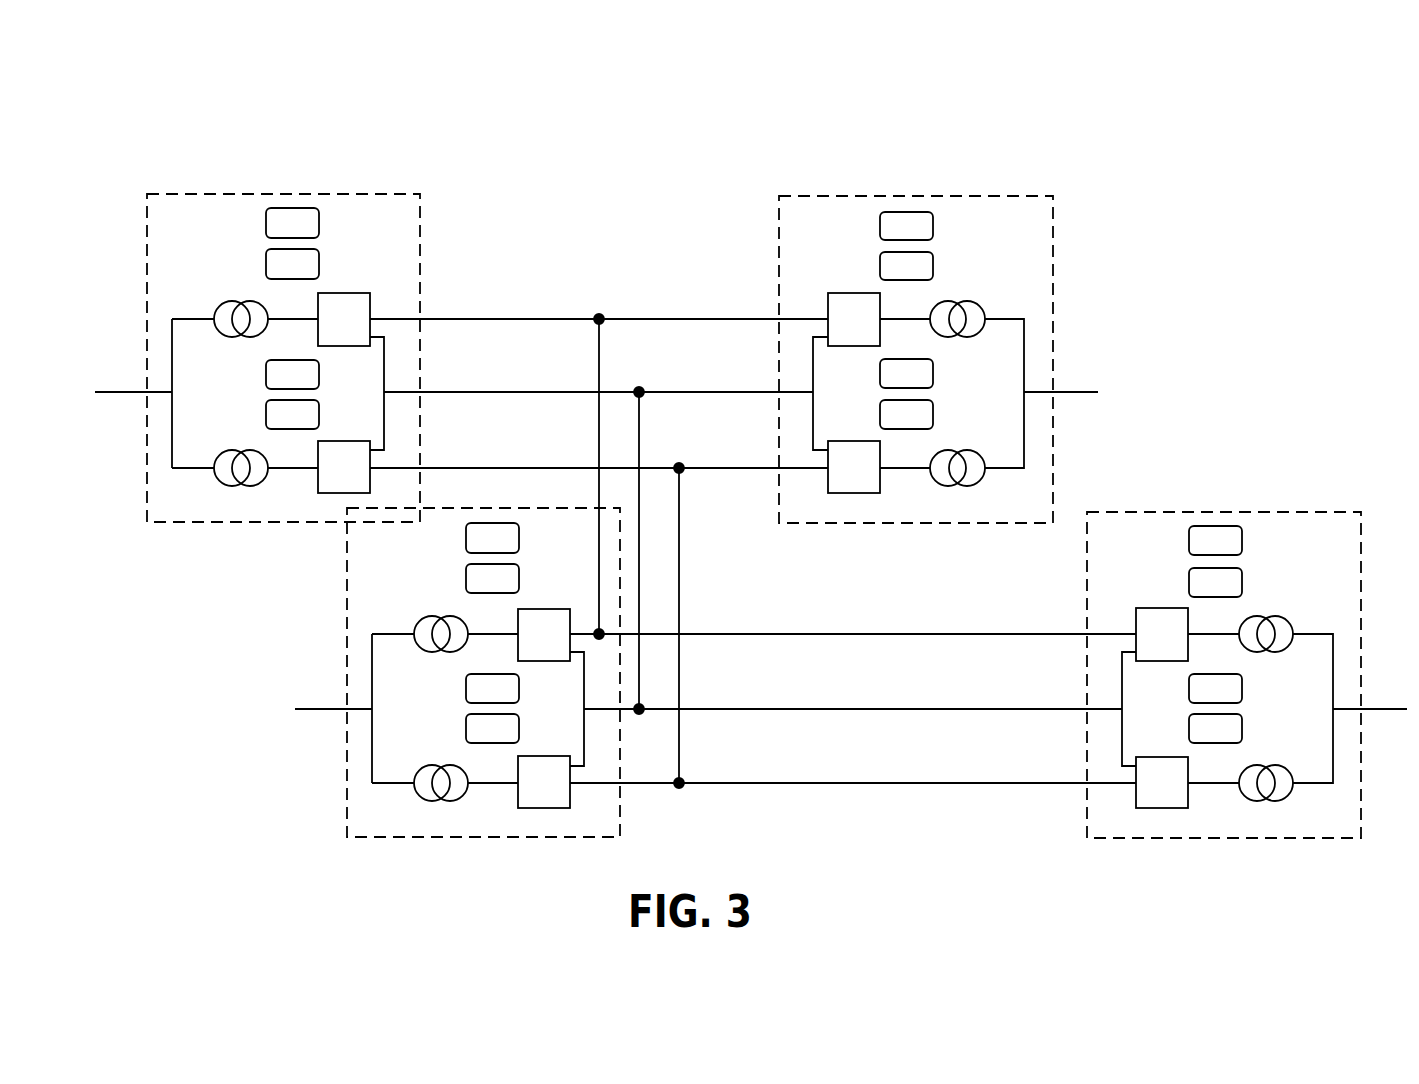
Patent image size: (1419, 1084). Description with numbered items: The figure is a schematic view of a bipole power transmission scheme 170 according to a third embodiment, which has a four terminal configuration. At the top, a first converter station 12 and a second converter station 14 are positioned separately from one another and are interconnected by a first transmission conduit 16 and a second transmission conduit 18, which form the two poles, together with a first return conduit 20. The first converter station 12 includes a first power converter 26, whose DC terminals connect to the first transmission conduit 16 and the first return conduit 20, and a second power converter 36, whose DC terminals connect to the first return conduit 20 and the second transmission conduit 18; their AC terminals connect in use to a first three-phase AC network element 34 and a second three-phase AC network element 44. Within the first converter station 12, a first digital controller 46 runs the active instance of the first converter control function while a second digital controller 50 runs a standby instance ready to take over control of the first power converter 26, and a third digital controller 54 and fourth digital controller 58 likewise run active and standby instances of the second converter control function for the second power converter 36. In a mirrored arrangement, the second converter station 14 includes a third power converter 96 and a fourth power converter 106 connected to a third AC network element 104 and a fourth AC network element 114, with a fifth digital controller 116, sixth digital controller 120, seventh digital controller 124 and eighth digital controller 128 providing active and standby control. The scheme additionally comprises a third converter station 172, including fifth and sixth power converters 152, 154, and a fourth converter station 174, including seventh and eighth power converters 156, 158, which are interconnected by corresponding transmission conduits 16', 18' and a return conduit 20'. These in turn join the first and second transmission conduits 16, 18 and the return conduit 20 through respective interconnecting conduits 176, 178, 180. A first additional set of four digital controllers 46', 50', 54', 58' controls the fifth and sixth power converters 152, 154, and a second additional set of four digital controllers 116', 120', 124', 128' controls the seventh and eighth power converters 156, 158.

The bipole power transmission scheme 170 is at (176, 120).
The first converter station 12 is at (270, 193).
The second converter station 14 is at (901, 195).
The third converter station 172 is at (570, 818).
The fourth converter station 174 is at (1312, 822).
The first transmission conduit 16 is at (599, 289).
The second transmission conduit 18 is at (599, 438).
The first return conduit 20 is at (598, 362).
The first three-phase AC network element 34 is at (133, 392).
The second three-phase AC network element 44 is at (335, 708).
The third three-phase AC network element 104 is at (1059, 392).
The fourth three-phase AC network element 114 is at (1369, 704).
The first power converter 26 is at (344, 319).
The second power converter 36 is at (344, 467).
The first digital controller 46 is at (292, 223).
The second digital controller 50 is at (292, 264).
The third digital controller 54 is at (292, 374).
The fourth digital controller 58 is at (292, 414).
The third power converter 96 is at (854, 319).
The fourth power converter 106 is at (854, 467).
The fifth digital controller 116 is at (906, 226).
The sixth digital controller 120 is at (906, 266).
The seventh digital controller 124 is at (906, 373).
The eighth digital controller 128 is at (906, 414).
The fifth power converter 152 is at (544, 635).
The sixth power converter 154 is at (544, 782).
The seventh power converter 156 is at (1162, 634).
The eighth power converter 158 is at (1162, 782).
The digital controller 46' is at (525, 535).
The digital controller 50' is at (525, 574).
The digital controller 54' is at (525, 685).
The digital controller 58' is at (525, 726).
The digital controller 116' is at (1255, 538).
The digital controller 120' is at (1255, 579).
The digital controller 124' is at (1255, 685).
The digital controller 128' is at (1255, 726).
The transmission conduit 16' is at (853, 603).
The transmission conduit 18' is at (853, 753).
The return conduit 20' is at (853, 678).
The interconnecting conduit 176 is at (600, 360).
The interconnecting conduit 178 is at (640, 435).
The interconnecting conduit 180 is at (680, 572).